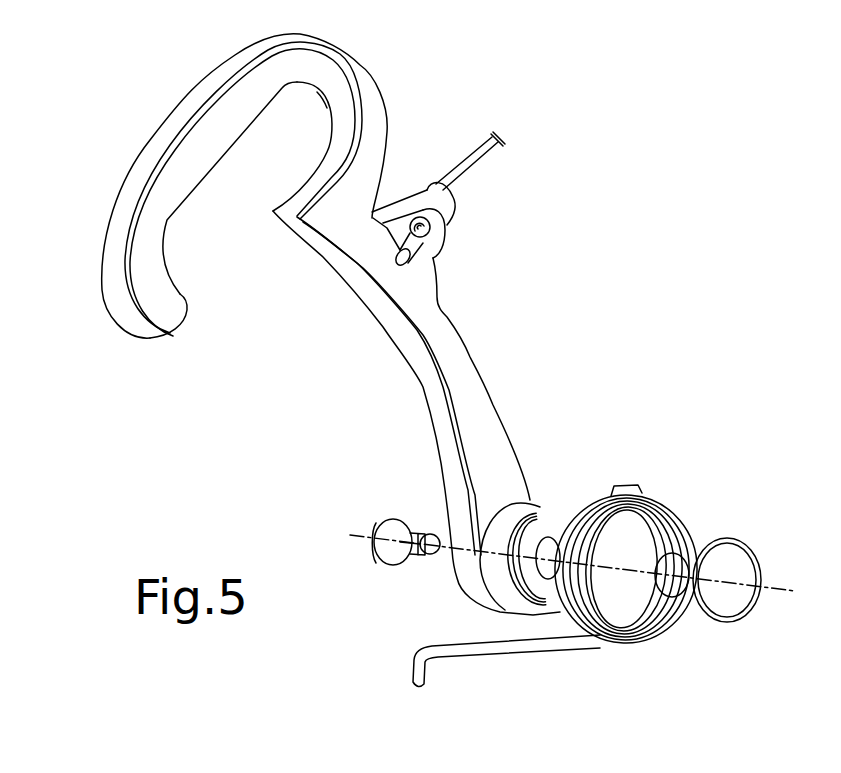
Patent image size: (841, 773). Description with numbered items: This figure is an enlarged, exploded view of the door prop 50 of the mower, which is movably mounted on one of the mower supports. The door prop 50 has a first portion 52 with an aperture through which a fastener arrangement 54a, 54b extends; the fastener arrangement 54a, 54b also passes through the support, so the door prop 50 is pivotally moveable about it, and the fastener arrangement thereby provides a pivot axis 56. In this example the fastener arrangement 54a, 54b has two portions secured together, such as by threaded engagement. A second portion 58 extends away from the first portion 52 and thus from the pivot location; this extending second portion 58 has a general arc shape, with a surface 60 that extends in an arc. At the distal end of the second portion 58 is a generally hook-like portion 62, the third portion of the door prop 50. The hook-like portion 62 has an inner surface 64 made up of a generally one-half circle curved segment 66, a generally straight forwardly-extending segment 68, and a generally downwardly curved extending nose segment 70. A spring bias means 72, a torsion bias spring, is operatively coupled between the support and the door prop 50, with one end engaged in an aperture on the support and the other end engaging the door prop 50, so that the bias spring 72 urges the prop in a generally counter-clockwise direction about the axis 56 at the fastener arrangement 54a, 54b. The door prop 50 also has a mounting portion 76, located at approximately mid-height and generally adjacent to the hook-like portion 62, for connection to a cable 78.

The door prop 50 is at (105, 134).
The first portion 52 is at (527, 482).
The fastener arrangement 54a is at (408, 522).
The fastener arrangement 54b is at (740, 558).
The pivot axis 56 is at (777, 589).
The second portion 58 is at (462, 347).
The surface 60 is at (410, 349).
The hook-like portion 62 is at (235, 75).
The inner surface 64 is at (168, 218).
The curved segment 66 is at (333, 109).
The straight forwardly-extending segment 68 is at (223, 149).
The nose segment 70 is at (183, 304).
The spring bias means 72 is at (664, 496).
The mounting portion 76 is at (447, 229).
The cable 78 is at (484, 163).